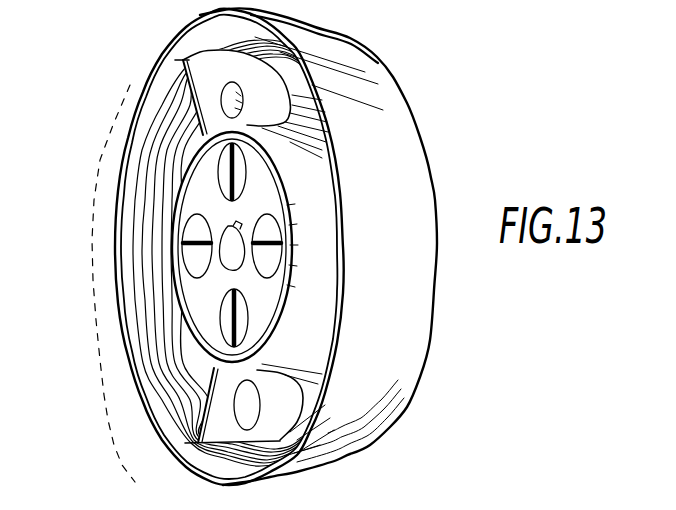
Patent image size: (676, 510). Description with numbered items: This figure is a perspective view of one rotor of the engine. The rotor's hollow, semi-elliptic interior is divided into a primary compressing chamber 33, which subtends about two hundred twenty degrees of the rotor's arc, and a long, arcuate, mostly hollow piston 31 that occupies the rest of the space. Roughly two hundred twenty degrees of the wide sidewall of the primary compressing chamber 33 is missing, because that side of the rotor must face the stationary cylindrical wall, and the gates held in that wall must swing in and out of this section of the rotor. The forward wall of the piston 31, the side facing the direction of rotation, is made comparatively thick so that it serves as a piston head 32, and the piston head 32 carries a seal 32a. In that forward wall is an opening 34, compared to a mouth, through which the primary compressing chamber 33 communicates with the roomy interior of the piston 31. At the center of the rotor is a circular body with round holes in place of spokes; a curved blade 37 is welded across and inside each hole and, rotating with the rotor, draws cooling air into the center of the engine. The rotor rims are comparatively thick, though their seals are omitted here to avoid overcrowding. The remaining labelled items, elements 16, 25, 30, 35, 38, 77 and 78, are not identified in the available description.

The central locking nut 16 is at (238, 228).
The wheel assembly 25 is at (209, 498).
The piston 31 is at (92, 283).
The piston head 32 is at (268, 81).
The seal 32a is at (185, 88).
The primary compressing chamber 33 is at (385, 283).
The opening 34 is at (245, 93).
The hub aperture band 35 is at (240, 268).
The curved blade 37 is at (235, 247).
The rim flange 38 is at (336, 152).
The wheel 30 is at (493, 498).
The element 77 is at (619, 498).
The element 78 is at (559, 498).